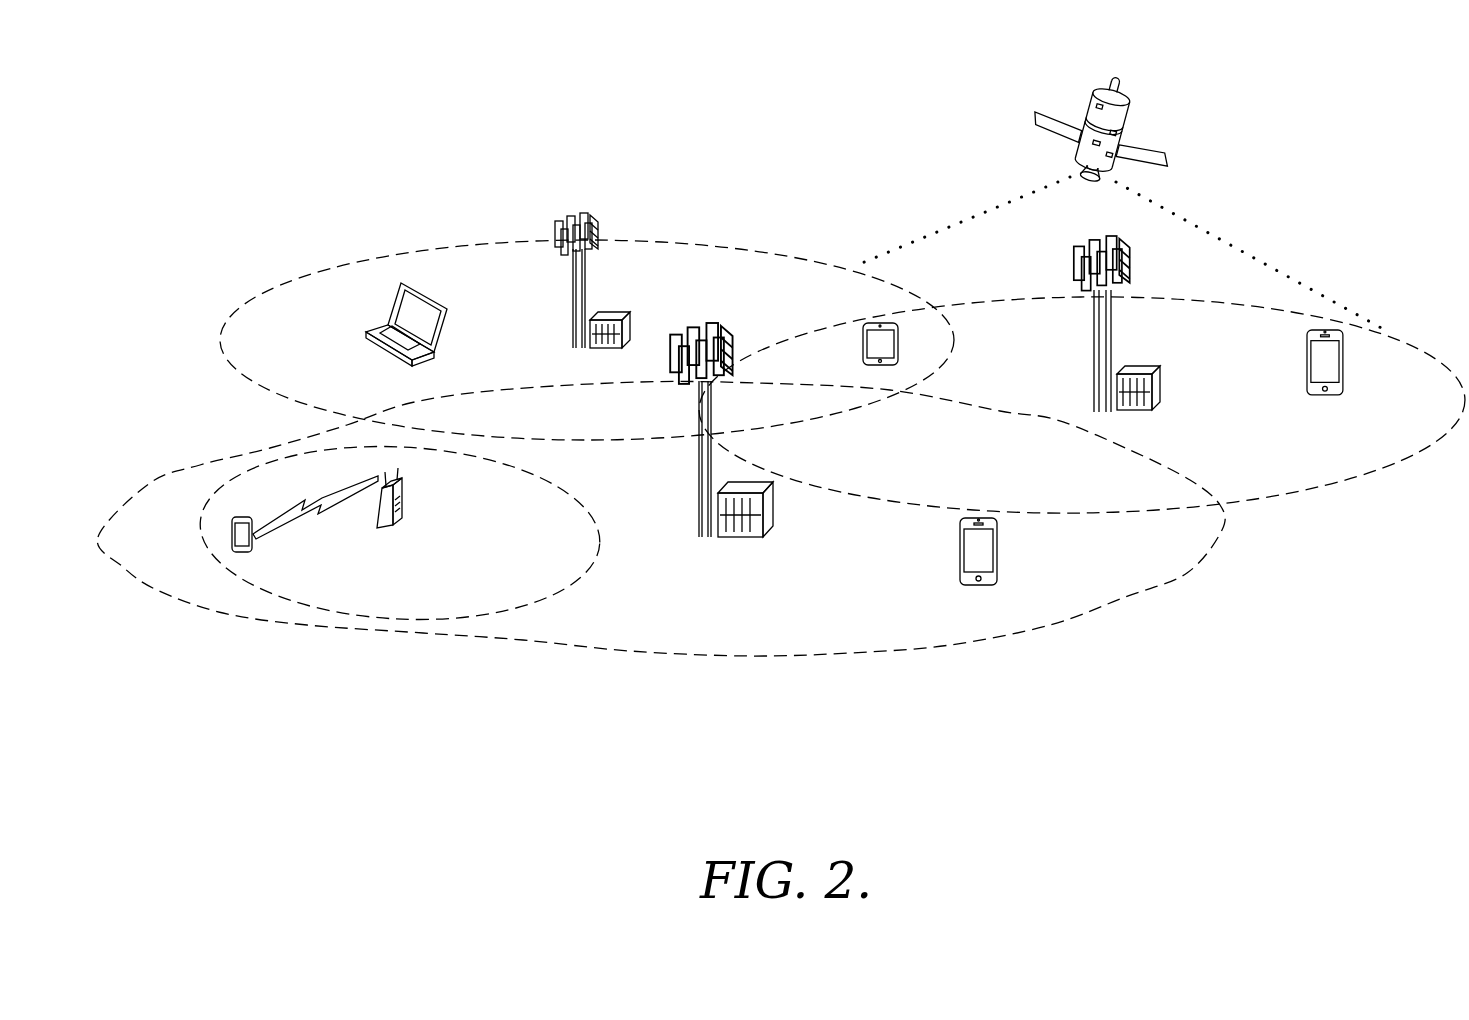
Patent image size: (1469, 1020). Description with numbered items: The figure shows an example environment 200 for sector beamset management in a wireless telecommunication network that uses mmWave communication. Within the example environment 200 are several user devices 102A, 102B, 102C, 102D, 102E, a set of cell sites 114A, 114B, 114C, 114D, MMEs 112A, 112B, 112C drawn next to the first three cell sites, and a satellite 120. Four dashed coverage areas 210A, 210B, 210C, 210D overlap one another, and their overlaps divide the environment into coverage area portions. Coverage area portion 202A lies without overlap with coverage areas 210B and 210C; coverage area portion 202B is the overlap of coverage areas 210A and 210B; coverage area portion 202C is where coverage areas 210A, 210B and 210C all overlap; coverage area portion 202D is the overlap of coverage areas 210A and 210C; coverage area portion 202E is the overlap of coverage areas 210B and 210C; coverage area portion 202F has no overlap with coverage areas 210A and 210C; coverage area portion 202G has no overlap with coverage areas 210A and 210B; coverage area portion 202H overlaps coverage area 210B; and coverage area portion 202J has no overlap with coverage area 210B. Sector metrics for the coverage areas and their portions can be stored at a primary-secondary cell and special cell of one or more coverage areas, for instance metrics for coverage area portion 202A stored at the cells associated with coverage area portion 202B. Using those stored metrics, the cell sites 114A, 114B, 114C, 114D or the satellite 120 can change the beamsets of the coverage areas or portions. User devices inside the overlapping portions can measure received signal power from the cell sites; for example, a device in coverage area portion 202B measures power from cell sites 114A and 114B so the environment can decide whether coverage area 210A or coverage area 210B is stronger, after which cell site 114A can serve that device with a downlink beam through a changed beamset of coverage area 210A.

The example environment 200 is at (288, 56).
The user device 102A is at (392, 357).
The user device 102B is at (898, 345).
The user device 102C is at (997, 562).
The user device 102D is at (1343, 383).
The user device 102E is at (235, 545).
The MME 112A is at (663, 292).
The MME 112B is at (747, 538).
The MME 112C is at (1192, 360).
The cell site 114A is at (553, 232).
The cell site 114B is at (740, 328).
The cell site 114C is at (1068, 256).
The cell site 114D is at (378, 530).
The satellite 120 is at (1122, 126).
The coverage area portion 202A is at (506, 345).
The coverage area portion 202B is at (590, 420).
The coverage area portion 202C is at (771, 400).
The coverage area portion 202D is at (804, 360).
The coverage area portion 202E is at (988, 450).
The coverage area portion 202F is at (824, 600).
The coverage area portion 202G is at (1234, 419).
The coverage area portion 202H is at (479, 540).
The coverage area portion 202J is at (144, 519).
The coverage area 210A is at (259, 293).
The coverage area 210B is at (1125, 597).
The coverage area 210C is at (1396, 470).
The coverage area 210D is at (307, 623).